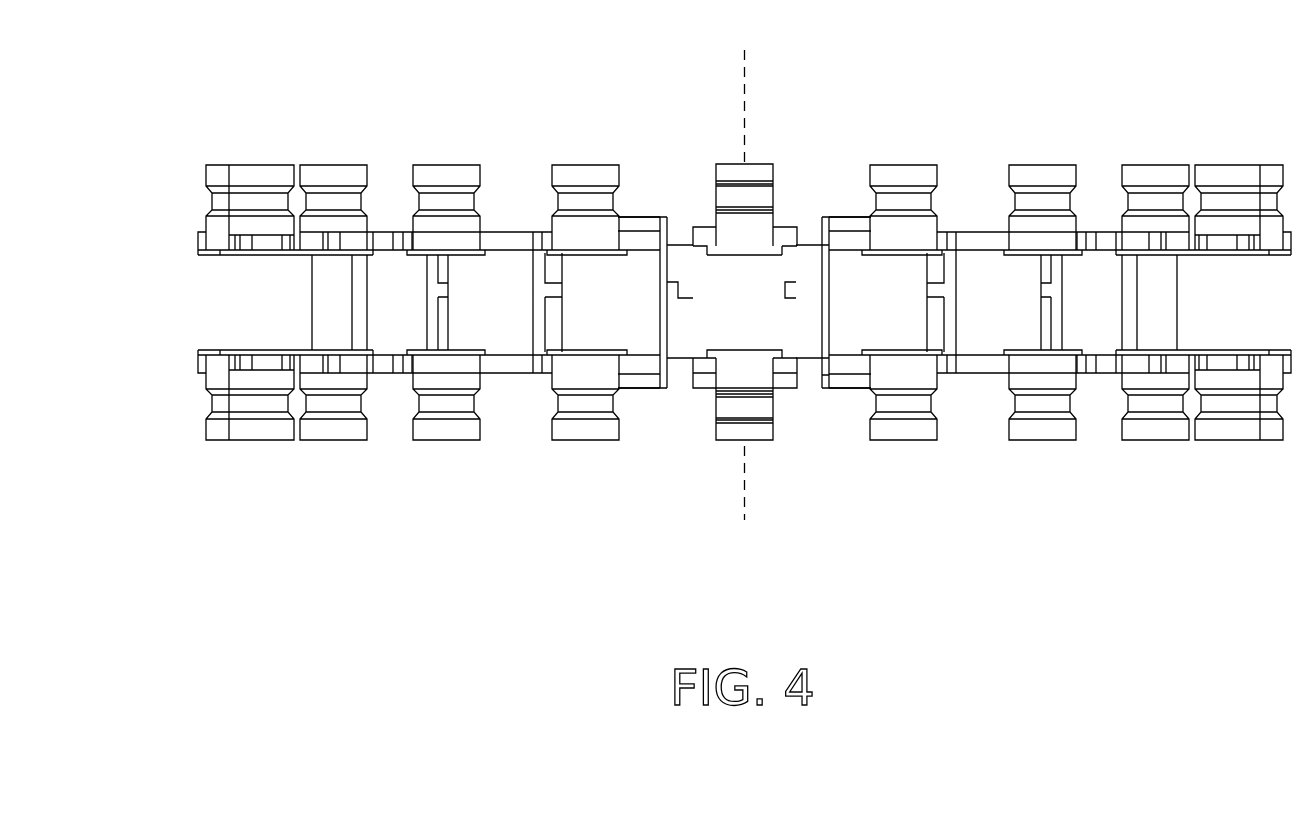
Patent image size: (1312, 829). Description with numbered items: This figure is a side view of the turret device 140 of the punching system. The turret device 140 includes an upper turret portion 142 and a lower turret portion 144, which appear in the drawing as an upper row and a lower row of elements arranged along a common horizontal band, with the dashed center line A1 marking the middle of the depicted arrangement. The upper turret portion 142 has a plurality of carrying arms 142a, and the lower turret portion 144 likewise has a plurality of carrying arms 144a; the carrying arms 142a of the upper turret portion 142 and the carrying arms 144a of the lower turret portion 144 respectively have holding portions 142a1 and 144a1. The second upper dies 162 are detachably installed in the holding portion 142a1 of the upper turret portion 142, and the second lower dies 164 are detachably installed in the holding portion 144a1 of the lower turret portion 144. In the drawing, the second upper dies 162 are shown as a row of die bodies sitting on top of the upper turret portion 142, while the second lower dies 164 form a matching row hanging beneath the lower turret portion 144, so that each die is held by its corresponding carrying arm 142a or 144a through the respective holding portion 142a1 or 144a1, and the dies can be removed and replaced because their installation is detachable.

The turret device 140 is at (797, 128).
The upper turret portion 142 is at (189, 111).
The lower turret portion 144 is at (173, 383).
The carrying arm 142a is at (655, 218).
The carrying arm 144a is at (651, 392).
The holding portion 142a1 is at (787, 236).
The holding portion 144a1 is at (783, 371).
The second upper die 162 is at (330, 163).
The second lower die 164 is at (330, 441).
The axis A1 is at (747, 266).